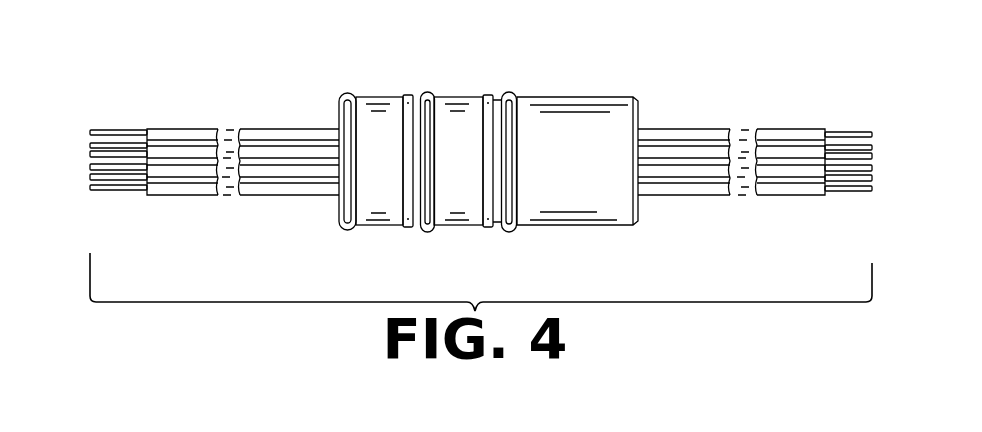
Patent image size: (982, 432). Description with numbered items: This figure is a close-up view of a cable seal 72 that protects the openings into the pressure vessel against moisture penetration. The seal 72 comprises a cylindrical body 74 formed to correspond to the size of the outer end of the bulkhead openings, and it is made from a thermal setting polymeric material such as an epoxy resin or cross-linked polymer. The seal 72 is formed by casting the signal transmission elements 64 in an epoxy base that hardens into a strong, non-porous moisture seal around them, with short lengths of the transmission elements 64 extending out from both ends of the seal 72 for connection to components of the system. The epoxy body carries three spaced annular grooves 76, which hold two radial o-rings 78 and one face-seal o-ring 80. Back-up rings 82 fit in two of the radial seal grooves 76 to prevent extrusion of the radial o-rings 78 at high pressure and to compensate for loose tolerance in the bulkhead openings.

The signal transmission elements 64 is at (220, 107).
The seal 72 is at (490, 68).
The cylindrical body 74 is at (594, 108).
The annular grooves 76 is at (421, 231).
The radial o-rings 78 is at (433, 95).
The face-seal o-ring 80 is at (345, 97).
The back-up rings 82 is at (406, 94).